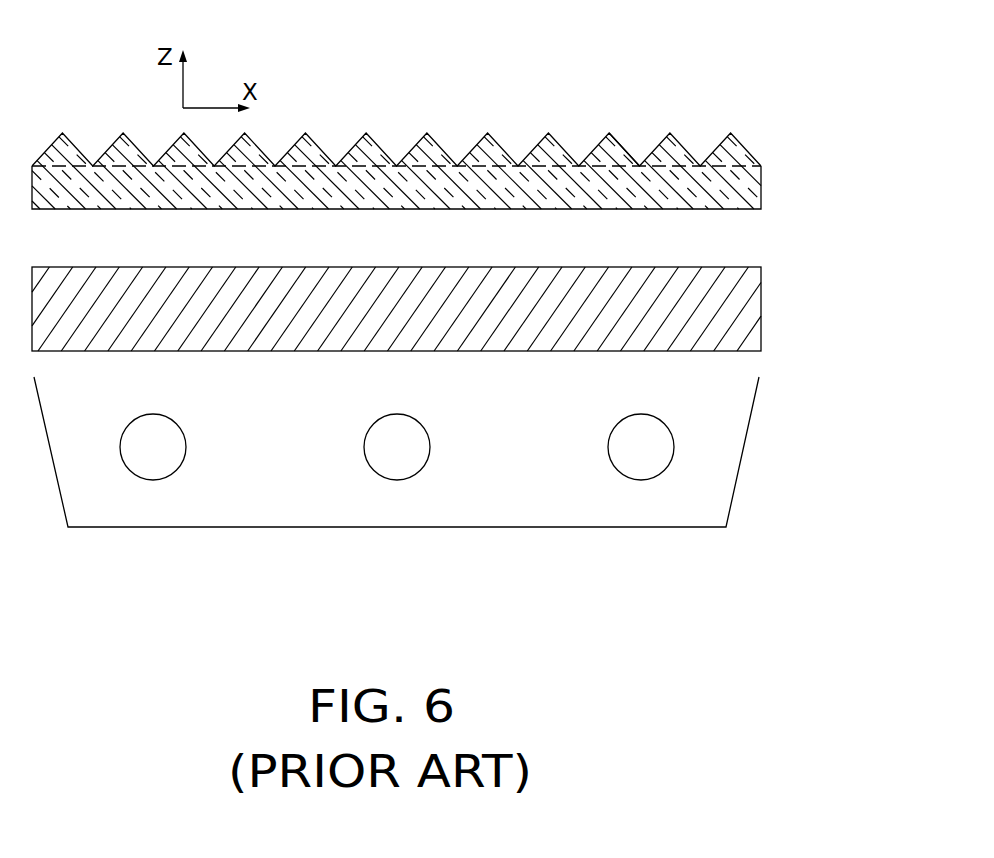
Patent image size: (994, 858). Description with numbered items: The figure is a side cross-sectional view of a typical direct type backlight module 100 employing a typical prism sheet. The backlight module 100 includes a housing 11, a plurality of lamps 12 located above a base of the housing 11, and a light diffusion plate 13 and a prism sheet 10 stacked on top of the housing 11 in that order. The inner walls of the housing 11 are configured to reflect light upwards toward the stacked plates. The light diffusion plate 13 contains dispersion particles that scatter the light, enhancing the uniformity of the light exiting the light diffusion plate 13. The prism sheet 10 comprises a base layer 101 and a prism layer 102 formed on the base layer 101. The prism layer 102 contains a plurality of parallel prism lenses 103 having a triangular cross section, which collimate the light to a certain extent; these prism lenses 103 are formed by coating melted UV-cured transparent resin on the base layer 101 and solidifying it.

The backlight module 100 is at (526, 104).
The prism sheet 10 is at (815, 98).
The base layer 101 is at (697, 208).
The prism layer 102 is at (735, 157).
The prism lenses 103 is at (621, 142).
The light diffusion plate 13 is at (750, 313).
The housing 11 is at (749, 428).
The lamps 12 is at (647, 465).